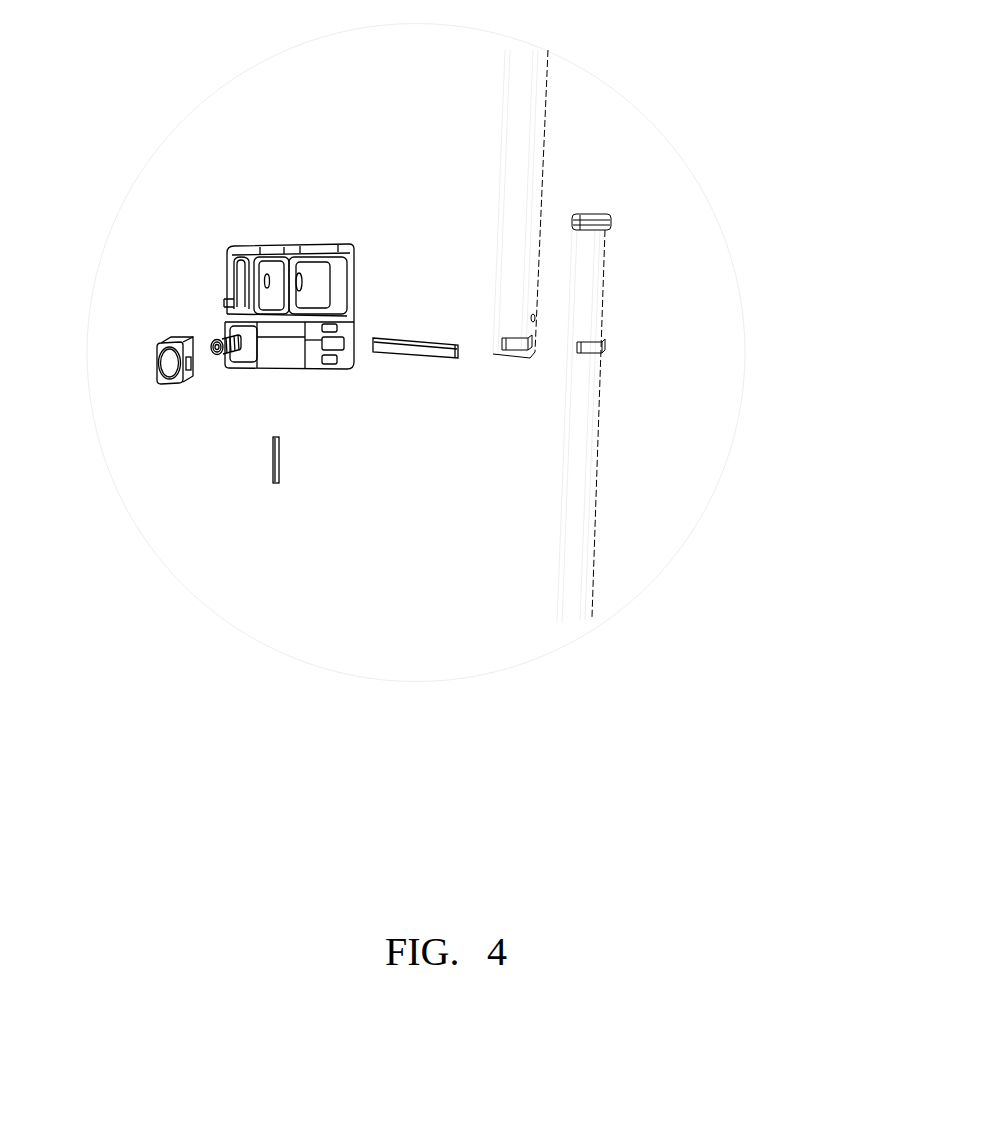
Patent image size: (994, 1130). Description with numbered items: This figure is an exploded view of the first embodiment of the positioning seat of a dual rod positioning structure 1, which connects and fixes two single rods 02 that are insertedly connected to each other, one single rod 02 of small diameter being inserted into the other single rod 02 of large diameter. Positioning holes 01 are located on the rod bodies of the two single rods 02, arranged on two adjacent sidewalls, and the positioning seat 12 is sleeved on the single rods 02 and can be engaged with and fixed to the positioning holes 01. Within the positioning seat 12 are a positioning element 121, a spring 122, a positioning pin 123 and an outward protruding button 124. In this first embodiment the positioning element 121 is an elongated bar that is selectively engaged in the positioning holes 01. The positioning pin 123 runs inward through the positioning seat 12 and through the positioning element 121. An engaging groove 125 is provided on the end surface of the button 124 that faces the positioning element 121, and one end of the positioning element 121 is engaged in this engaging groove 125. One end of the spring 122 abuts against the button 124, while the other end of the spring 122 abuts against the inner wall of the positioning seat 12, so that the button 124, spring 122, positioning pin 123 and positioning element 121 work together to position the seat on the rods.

The display device 1 is at (633, 100).
The positioning hole 01 is at (590, 347).
The single rod 02 is at (517, 192).
The positioning seat 12 is at (335, 283).
The positioning element 121 is at (432, 338).
The spring 122 is at (223, 357).
The positioning pin 123 is at (278, 460).
The button 124 is at (166, 366).
The engaging groove 125 is at (190, 333).